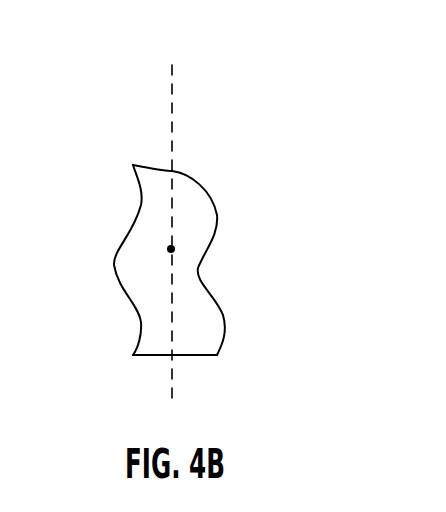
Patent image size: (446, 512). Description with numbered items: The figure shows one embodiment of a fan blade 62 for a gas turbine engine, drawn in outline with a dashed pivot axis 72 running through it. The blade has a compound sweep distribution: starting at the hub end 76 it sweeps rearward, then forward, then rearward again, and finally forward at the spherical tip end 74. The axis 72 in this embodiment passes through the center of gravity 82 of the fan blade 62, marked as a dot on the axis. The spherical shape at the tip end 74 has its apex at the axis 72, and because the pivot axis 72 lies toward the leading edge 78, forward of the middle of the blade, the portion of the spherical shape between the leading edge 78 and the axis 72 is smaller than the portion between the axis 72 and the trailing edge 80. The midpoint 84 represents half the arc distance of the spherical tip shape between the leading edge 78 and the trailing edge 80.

The fan blade 62 is at (223, 225).
The pivot axis 72 is at (171, 70).
The spherical tip end 74 is at (174, 170).
The hub end 76 is at (200, 356).
The leading edge 78 is at (116, 268).
The trailing edge 80 is at (207, 274).
The center of gravity 82 is at (167, 249).
The midpoint 84 is at (196, 183).